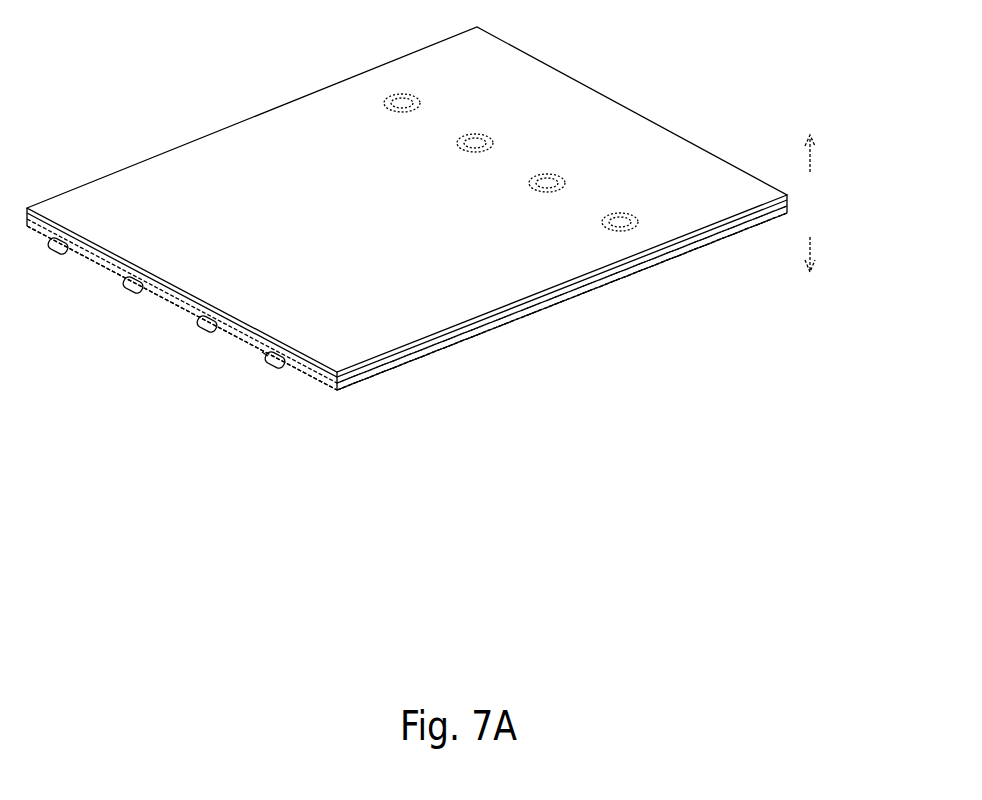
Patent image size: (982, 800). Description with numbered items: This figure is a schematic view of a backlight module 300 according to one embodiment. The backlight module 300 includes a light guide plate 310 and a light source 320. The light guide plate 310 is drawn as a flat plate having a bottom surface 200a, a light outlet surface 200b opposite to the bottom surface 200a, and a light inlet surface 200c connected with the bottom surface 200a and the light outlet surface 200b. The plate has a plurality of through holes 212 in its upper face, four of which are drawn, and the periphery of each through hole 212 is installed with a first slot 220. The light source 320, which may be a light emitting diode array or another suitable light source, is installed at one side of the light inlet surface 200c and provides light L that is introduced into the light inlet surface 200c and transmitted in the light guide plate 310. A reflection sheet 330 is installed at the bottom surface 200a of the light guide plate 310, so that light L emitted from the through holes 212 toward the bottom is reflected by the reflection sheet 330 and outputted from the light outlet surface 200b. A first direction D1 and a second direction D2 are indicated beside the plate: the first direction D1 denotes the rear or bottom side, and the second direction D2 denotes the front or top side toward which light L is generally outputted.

The bottom surface 200a is at (45, 230).
The light outlet surface 200b is at (376, 387).
The light inlet surface 200c is at (96, 265).
The through hole 212 is at (401, 92).
The first slot 220 is at (411, 92).
The backlight module 300 is at (793, 437).
The light guide plate 310 is at (421, 360).
The light source 320 is at (268, 367).
The reflection sheet 330 is at (538, 300).
The light L is at (262, 352).
The first direction D1 is at (823, 153).
The second direction D2 is at (825, 256).